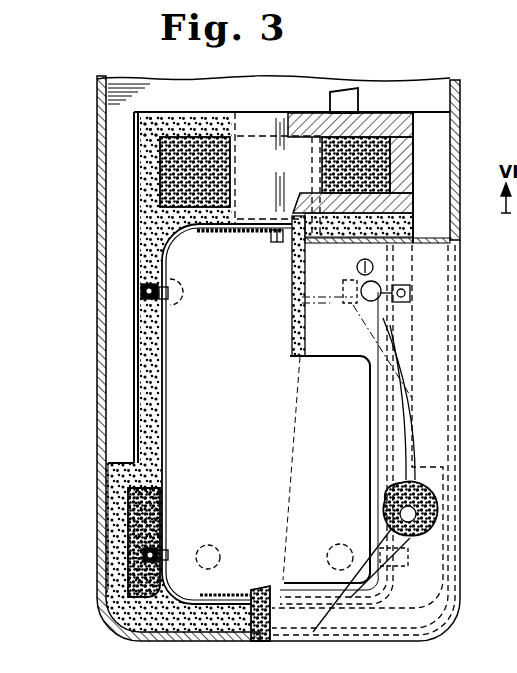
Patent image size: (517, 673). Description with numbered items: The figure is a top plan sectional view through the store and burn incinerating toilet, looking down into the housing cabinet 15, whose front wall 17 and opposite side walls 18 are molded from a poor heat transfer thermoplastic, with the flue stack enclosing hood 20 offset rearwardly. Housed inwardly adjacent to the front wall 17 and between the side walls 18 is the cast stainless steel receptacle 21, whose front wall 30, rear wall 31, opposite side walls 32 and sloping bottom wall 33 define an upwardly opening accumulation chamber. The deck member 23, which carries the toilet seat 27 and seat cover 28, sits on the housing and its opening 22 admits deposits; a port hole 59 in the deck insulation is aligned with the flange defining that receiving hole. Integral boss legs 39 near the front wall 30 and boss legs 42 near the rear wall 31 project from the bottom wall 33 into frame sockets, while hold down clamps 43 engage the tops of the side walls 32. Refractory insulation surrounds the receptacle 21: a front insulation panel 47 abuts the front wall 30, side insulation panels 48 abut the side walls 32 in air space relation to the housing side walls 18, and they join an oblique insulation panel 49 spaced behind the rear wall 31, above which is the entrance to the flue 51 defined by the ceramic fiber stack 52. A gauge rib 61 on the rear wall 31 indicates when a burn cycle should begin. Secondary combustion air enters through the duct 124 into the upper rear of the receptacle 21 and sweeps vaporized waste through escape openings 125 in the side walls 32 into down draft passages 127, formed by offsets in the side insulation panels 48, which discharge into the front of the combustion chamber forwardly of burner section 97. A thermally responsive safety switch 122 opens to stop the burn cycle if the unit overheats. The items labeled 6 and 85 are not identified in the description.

The section line 6 is at (509, 431).
The housing cabinet 15 is at (113, 629).
The front wall 17 is at (243, 640).
The side walls 18 is at (97, 398).
The flue stack enclosing hood 20 is at (428, 237).
The receptacle 21 is at (153, 255).
The opening 22 is at (346, 364).
The deck member 23 is at (430, 318).
The toilet seat 27 is at (420, 420).
The seat cover 28 is at (407, 400).
The front wall 30 is at (233, 592).
The rear wall 31 is at (210, 232).
The side walls 32 is at (168, 420).
The bottom wall 33 is at (276, 389).
The boss legs 39 is at (222, 547).
The boss legs 42 is at (183, 292).
The hold down clamps 43 is at (169, 300).
The front insulation panel 47 is at (208, 615).
The side insulation panels 48 is at (143, 362).
The oblique insulation panel 49 is at (206, 118).
The flue 51 is at (360, 150).
The stack 52 is at (409, 153).
The port hole 59 is at (368, 427).
The gauge rib 61 is at (278, 243).
The reference 85 is at (508, 111).
The burner section 97 is at (330, 100).
The thermally responsive safety switch 122 is at (390, 494).
The duct 124 is at (298, 181).
The escape openings 125 is at (170, 516).
The down draft passages 127 is at (142, 528).